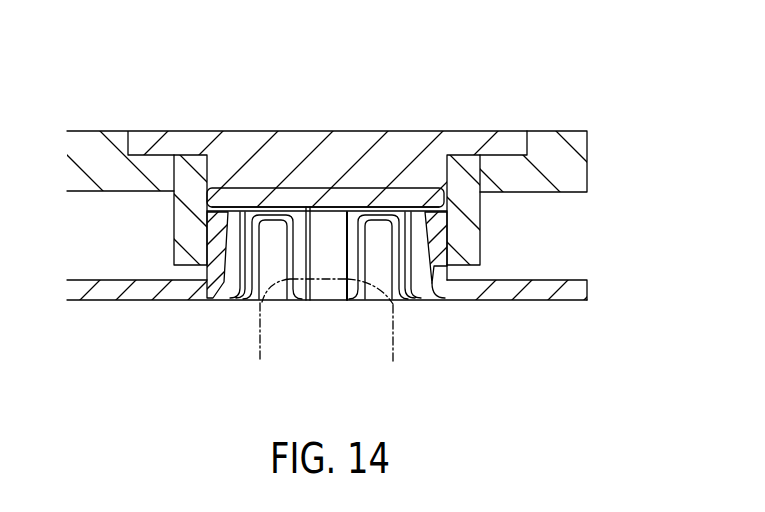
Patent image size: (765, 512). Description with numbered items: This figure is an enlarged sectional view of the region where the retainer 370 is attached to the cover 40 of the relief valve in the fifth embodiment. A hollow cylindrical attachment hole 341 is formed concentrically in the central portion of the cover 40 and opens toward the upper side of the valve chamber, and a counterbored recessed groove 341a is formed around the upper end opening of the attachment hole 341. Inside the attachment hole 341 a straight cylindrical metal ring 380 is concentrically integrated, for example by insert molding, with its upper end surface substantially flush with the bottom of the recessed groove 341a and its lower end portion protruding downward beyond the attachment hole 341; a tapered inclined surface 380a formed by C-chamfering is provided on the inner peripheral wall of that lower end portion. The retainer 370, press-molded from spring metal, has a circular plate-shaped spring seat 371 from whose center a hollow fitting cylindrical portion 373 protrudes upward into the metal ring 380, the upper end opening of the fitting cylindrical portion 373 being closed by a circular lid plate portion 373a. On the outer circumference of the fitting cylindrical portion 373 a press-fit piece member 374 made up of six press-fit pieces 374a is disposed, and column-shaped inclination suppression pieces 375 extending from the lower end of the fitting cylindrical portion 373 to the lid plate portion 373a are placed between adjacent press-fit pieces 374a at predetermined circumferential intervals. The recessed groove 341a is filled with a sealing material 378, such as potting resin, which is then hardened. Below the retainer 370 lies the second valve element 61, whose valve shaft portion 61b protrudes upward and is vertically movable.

The cover 40 is at (91, 128).
The attachment hole 341 is at (188, 167).
The recessed groove 341a is at (525, 153).
The sealing material 378 is at (270, 167).
The fitting cylindrical portion 373 is at (384, 182).
The lid plate portion 373a is at (308, 203).
The press-fit piece member 374 is at (372, 205).
The press-fit piece 374a is at (218, 242).
The inclination suppression piece 375 is at (240, 220).
The metal ring 380 is at (473, 244).
The inclined surface 380a is at (449, 248).
The spring seat 371 is at (568, 290).
The retainer 370 is at (104, 309).
The second valve element 61 is at (401, 350).
The valve shaft portion 61b is at (278, 348).